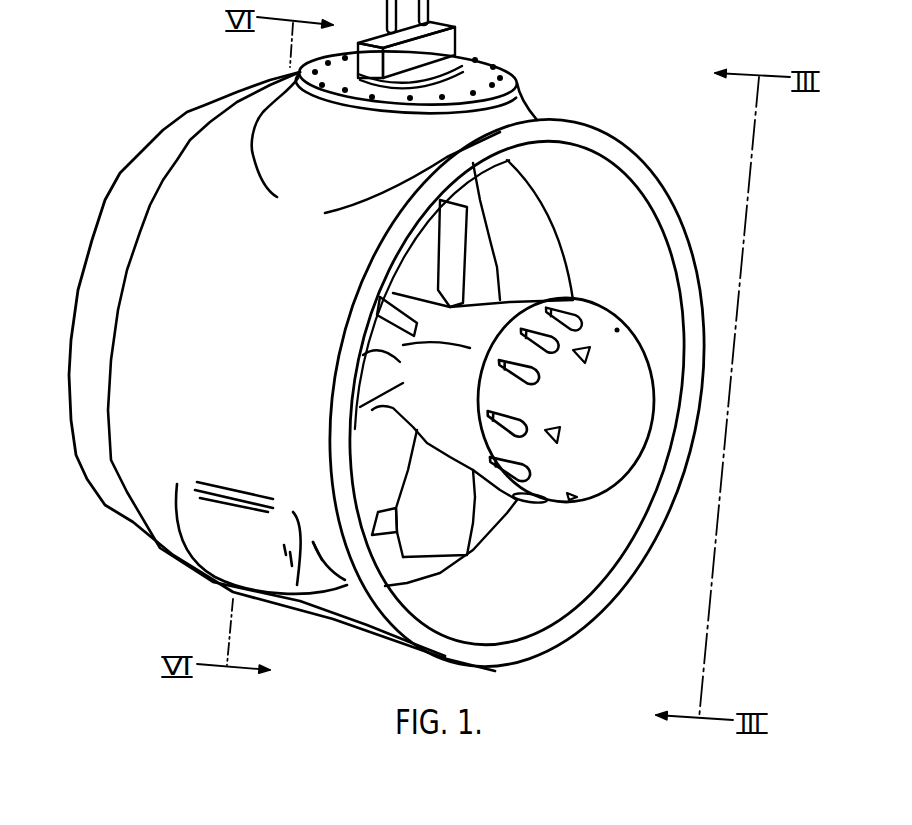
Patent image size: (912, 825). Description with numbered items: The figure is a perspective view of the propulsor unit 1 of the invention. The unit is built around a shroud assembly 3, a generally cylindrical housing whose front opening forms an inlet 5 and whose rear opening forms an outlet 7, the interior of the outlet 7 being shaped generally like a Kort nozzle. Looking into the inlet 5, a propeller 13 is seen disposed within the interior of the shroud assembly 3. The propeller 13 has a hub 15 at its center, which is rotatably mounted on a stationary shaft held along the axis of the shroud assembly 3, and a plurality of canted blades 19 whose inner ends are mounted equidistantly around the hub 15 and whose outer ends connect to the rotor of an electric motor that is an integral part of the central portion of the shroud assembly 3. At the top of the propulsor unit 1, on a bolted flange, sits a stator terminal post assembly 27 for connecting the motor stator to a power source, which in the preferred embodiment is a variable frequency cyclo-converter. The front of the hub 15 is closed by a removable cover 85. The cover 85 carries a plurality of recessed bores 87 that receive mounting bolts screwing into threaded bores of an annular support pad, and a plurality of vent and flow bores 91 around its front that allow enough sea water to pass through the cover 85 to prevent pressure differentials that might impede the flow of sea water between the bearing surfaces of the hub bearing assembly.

The propulsor unit 1 is at (135, 135).
The shroud assembly 3 is at (173, 262).
The inlet 5 is at (619, 267).
The outlet 7 is at (80, 449).
The propeller 13 is at (425, 367).
The hub 15 is at (370, 330).
The canted blades 19 is at (553, 233).
The stator terminal post assembly 27 is at (460, 28).
The removable cover 85 is at (613, 445).
The recessed bores 87 is at (527, 370).
The vent and flow bores 91 is at (557, 430).